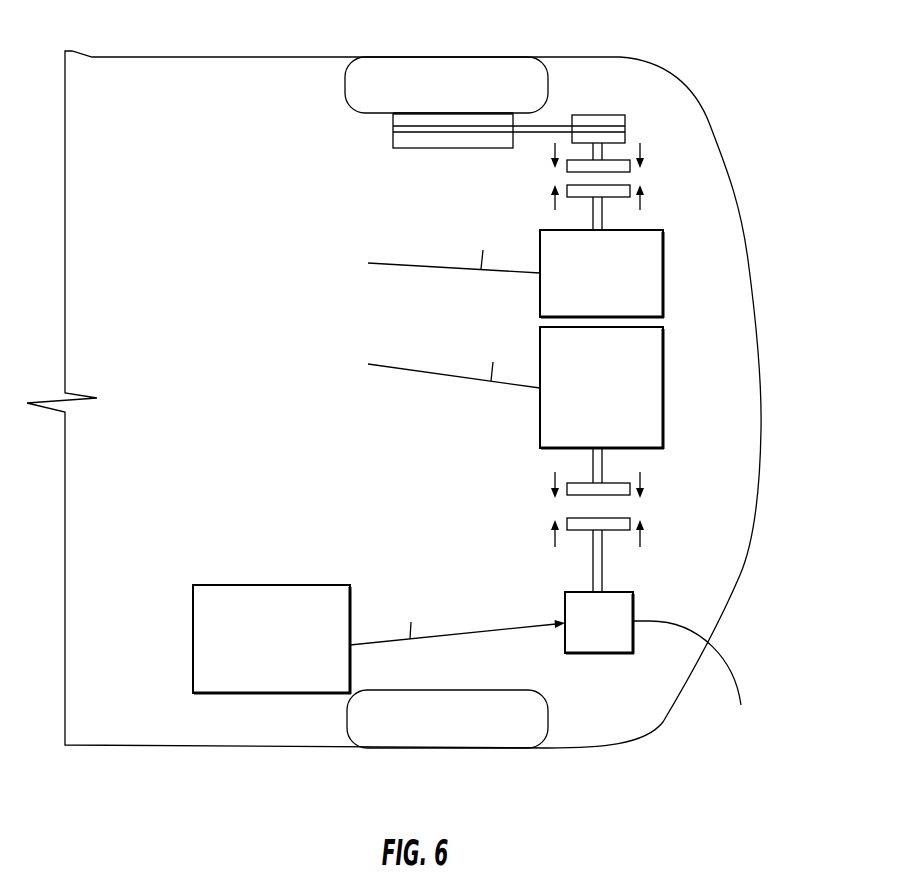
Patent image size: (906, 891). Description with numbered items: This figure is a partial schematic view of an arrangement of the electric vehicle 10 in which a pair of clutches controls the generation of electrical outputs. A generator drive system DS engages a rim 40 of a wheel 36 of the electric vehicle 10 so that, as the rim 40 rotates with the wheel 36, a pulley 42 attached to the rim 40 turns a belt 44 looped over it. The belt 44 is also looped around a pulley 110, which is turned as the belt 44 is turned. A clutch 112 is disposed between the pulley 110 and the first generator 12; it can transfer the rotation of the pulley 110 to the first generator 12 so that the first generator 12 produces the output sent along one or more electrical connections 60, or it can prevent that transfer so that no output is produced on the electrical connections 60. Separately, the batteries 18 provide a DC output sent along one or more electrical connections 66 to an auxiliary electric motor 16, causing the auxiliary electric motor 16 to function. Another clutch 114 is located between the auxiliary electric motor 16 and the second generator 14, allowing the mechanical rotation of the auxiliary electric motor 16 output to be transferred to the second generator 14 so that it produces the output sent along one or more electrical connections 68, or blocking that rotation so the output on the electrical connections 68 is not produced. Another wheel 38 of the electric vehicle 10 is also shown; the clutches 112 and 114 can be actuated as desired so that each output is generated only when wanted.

The electric vehicle 10 is at (767, 110).
The wheel 36 is at (440, 65).
The rim 40 is at (413, 113).
The pulley 42 is at (420, 150).
The belt 44 is at (552, 125).
The pulley 110 is at (615, 115).
The clutch 112 is at (628, 160).
The first generator 12 is at (590, 300).
The second generator 14 is at (590, 414).
The clutch 114 is at (622, 483).
The auxiliary electric motor 16 is at (588, 634).
The batteries 18 is at (259, 677).
The electrical connections 60 is at (445, 273).
The electrical connections 68 is at (457, 377).
The electrical connections 66 is at (456, 636).
The wheel 38 is at (419, 737).
The generator drive system DS is at (664, 178).